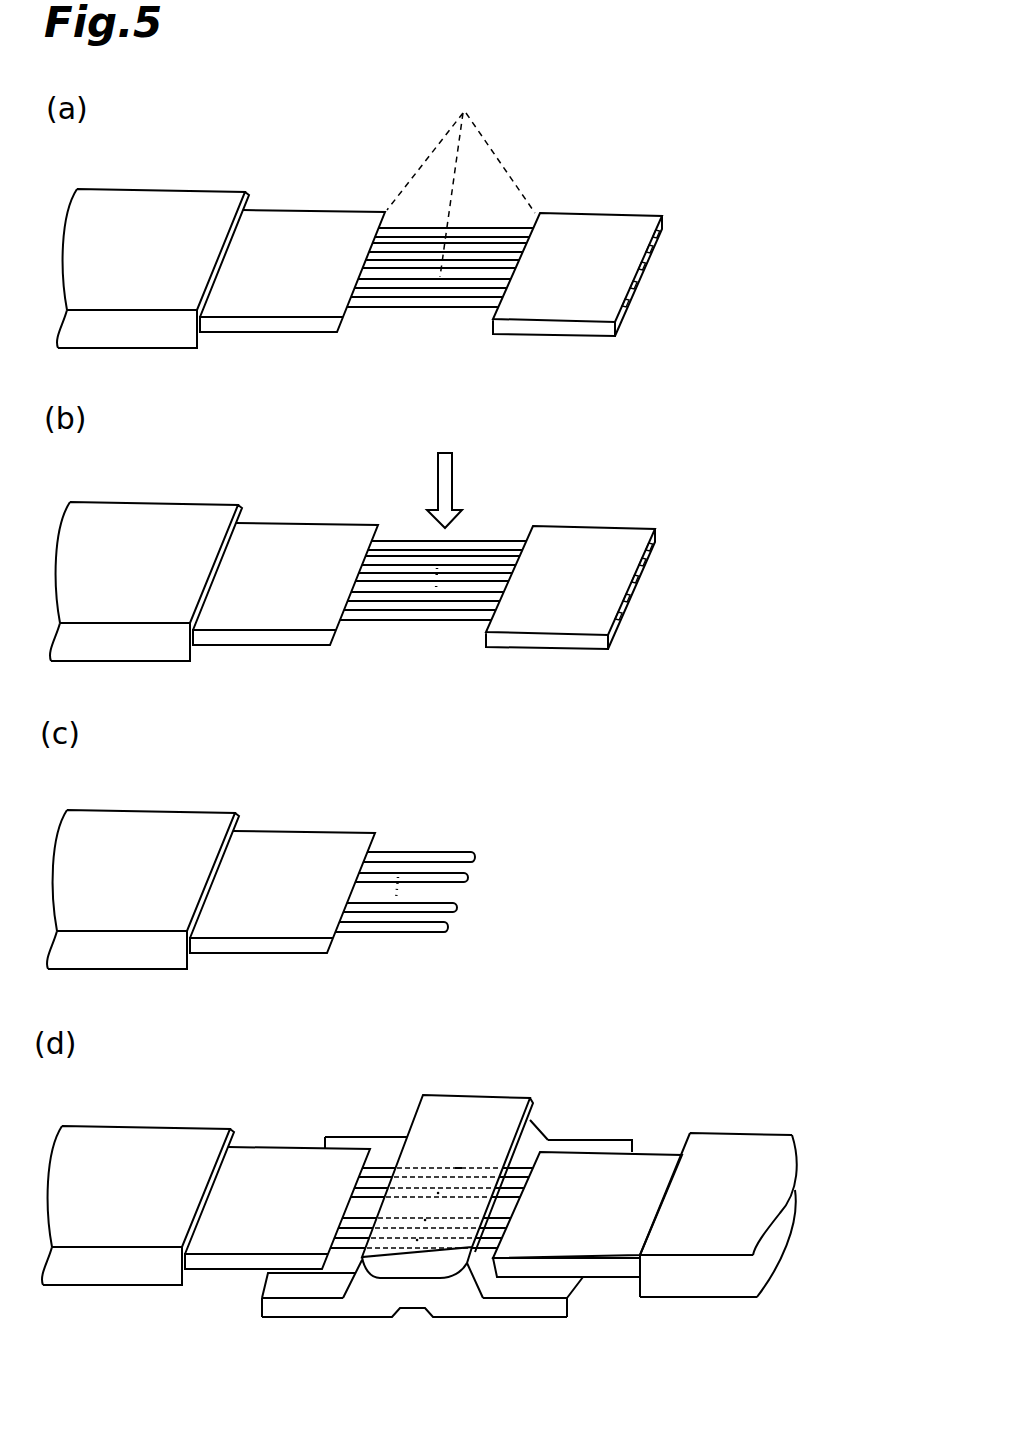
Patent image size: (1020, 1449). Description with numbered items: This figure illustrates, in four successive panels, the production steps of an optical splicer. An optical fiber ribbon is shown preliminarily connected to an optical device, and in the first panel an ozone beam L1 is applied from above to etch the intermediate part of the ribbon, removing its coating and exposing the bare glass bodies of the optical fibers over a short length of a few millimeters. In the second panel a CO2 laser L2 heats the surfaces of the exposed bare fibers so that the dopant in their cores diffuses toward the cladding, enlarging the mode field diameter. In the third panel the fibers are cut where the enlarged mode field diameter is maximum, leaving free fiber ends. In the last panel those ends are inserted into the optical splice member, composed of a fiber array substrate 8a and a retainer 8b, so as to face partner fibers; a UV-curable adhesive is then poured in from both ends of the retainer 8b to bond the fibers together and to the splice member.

The ozone beam L1 is at (461, 179).
The CO2 laser L2 is at (445, 473).
The fiber array substrate 8a is at (330, 1308).
The retainer 8b is at (428, 1267).